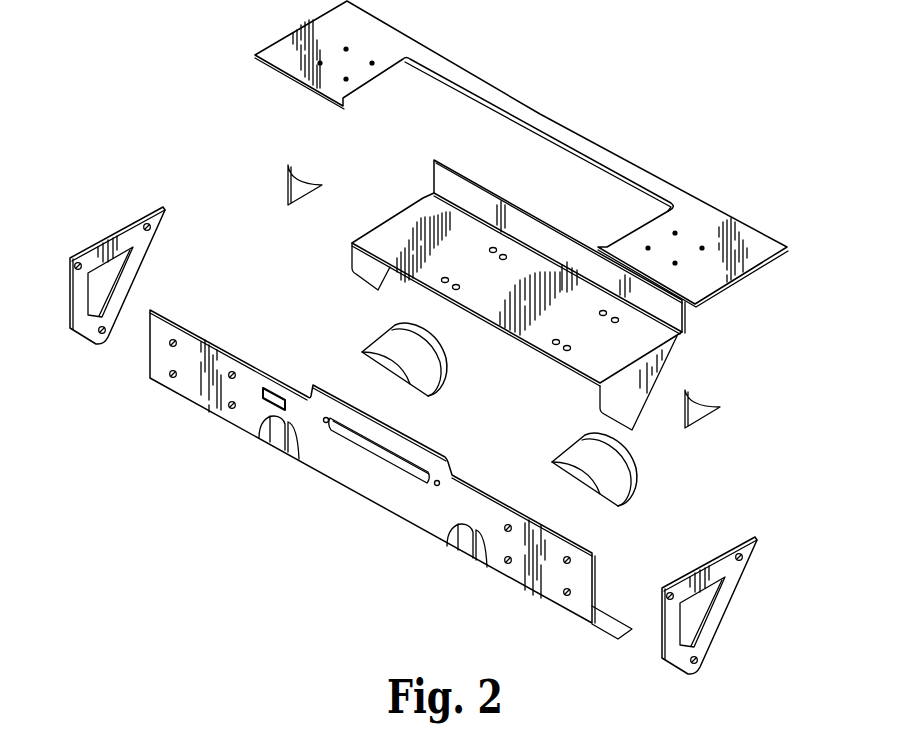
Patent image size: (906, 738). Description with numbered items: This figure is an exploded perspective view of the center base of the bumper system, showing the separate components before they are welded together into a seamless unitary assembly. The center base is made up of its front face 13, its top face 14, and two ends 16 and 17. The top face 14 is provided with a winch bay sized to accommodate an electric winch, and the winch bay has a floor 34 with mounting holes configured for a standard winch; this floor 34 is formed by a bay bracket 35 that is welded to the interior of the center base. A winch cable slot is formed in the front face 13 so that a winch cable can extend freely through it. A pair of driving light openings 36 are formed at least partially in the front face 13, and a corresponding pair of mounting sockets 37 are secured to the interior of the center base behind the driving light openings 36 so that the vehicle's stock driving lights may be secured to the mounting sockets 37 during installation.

The front face 13 is at (391, 474).
The top face 14 is at (689, 210).
The end 16 is at (744, 604).
The end 17 is at (69, 236).
The floor 34 is at (525, 287).
The bay bracket 35 is at (566, 295).
The driving light openings 36 is at (260, 453).
The mounting sockets 37 is at (460, 373).